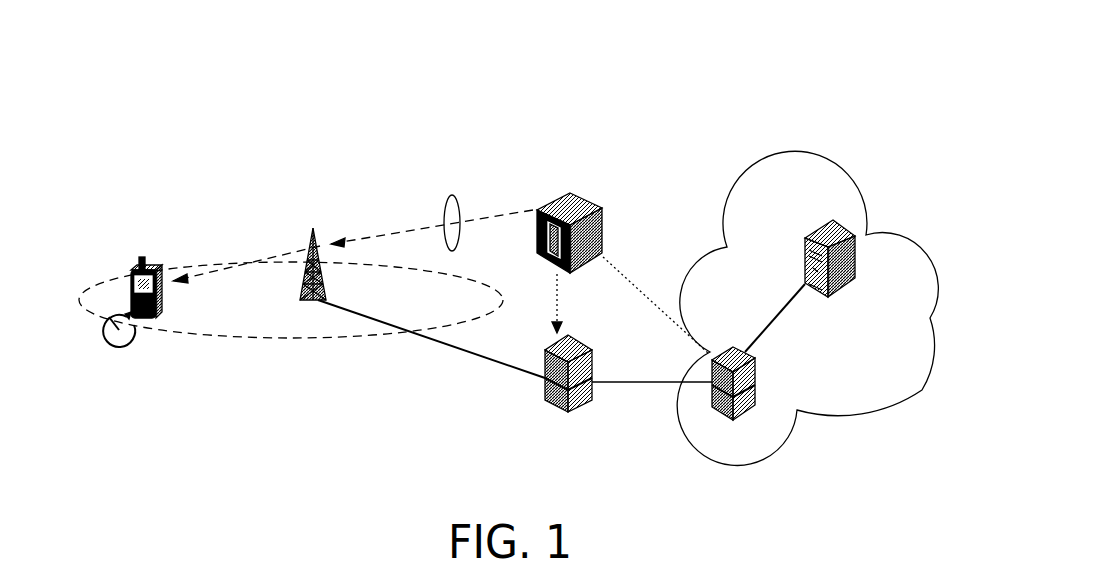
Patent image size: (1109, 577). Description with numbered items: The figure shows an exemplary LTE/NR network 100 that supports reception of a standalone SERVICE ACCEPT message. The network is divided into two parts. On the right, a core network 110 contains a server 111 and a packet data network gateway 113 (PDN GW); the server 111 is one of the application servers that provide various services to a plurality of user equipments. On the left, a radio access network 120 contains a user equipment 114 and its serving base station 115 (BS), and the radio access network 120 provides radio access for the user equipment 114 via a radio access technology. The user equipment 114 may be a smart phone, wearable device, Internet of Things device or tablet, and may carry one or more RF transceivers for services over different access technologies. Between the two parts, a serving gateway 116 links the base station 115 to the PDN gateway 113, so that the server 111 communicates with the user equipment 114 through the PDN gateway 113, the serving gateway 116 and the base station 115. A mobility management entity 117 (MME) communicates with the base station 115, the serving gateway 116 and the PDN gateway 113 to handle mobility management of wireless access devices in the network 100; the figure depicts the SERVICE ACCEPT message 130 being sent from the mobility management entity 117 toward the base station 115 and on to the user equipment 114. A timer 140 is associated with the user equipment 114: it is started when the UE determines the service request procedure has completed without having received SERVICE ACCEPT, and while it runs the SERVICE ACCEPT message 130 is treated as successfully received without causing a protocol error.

The LTE/NR network 100 is at (902, 62).
The core network 110 is at (866, 358).
The server 111 is at (824, 222).
The packet data network gateway 113 is at (730, 347).
The user equipment 114 is at (140, 258).
The base station 115 is at (313, 228).
The serving gateway 116 is at (590, 341).
The mobility management entity 117 is at (584, 197).
The radio access network 120 is at (238, 322).
The SERVICE ACCEPT message 130 is at (452, 195).
The timer 140 is at (118, 347).